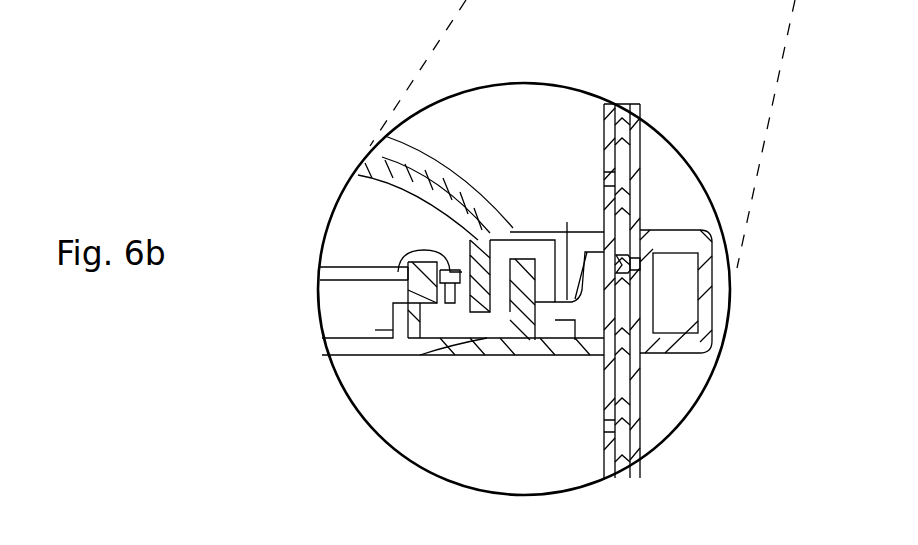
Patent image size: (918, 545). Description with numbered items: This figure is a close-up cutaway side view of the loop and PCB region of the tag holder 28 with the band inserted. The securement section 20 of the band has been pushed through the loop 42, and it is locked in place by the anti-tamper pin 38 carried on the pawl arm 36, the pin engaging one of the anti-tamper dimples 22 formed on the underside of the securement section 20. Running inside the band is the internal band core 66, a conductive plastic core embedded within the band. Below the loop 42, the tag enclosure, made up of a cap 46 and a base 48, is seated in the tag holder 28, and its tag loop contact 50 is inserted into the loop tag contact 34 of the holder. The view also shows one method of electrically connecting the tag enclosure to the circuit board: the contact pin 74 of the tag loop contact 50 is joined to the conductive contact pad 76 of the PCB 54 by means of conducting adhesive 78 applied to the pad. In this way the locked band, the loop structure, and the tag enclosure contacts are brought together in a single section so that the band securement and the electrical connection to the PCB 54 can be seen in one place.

The securement section 20 is at (652, 178).
The anti-tamper dimples 22 is at (606, 165).
The band core 66 is at (622, 102).
The tag holder 28 is at (444, 162).
The cap 46 is at (352, 169).
The loop tag contact 34 is at (504, 257).
The loop 42 is at (580, 236).
The anti-tamper pin 38 is at (640, 262).
The tag loop contact 50 is at (521, 330).
The pawl arm 36 is at (570, 326).
The base 48 is at (362, 348).
The PCB 54 is at (362, 288).
The contact pin 74 is at (424, 285).
The conducting adhesive 78 is at (422, 249).
The conductive contact pad 76 is at (406, 273).